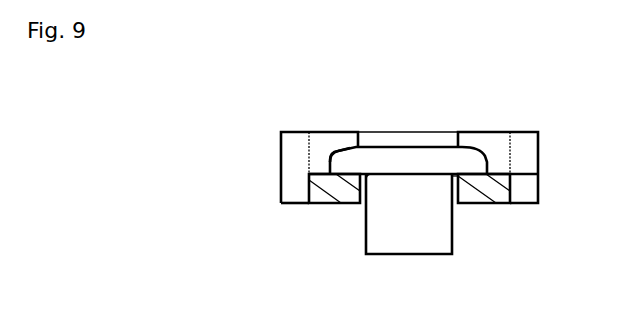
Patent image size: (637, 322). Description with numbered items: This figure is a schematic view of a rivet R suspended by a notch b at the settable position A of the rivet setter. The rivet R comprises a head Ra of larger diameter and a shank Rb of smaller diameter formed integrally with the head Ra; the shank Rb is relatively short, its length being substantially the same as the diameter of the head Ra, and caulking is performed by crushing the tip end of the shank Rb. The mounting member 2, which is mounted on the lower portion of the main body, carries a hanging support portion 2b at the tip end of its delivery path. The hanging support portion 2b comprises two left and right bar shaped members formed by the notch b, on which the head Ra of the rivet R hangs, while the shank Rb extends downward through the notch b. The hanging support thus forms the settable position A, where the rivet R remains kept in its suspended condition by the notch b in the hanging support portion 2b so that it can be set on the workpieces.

The mounting member 2 is at (288, 157).
The hanging support portion 2b is at (318, 195).
The rivet R is at (343, 148).
The head Ra is at (437, 155).
The shank Rb is at (398, 238).
The settable position A is at (365, 205).
The notch b is at (458, 192).